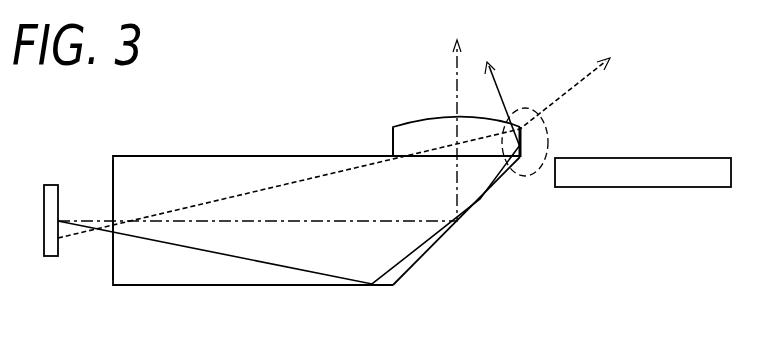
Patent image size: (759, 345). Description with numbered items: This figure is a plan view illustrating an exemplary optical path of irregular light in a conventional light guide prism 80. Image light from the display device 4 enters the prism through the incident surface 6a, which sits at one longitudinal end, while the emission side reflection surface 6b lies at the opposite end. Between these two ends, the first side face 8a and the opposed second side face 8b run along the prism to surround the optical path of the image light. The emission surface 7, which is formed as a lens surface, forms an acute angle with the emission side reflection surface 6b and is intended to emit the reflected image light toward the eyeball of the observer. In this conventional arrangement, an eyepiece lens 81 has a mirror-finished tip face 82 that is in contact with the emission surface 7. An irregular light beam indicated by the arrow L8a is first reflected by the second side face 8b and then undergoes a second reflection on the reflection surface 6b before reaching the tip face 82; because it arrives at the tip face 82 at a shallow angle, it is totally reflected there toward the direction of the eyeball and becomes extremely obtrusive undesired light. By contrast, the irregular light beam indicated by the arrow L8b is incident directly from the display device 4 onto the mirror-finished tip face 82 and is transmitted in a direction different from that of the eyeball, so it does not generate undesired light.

The display device 4 is at (45, 221).
The conventional light guide prism 80 is at (148, 180).
The first side face 8a is at (200, 155).
The second side face 8b is at (222, 285).
The incident surface 6a is at (113, 252).
The emission side reflection surface 6b is at (433, 245).
The emission surface 7 is at (423, 118).
The eyepiece lens 81 is at (400, 140).
The mirror-finished tip face 82 is at (520, 137).
The irregular light beam L8a is at (268, 262).
The irregular light beam L8b is at (290, 184).